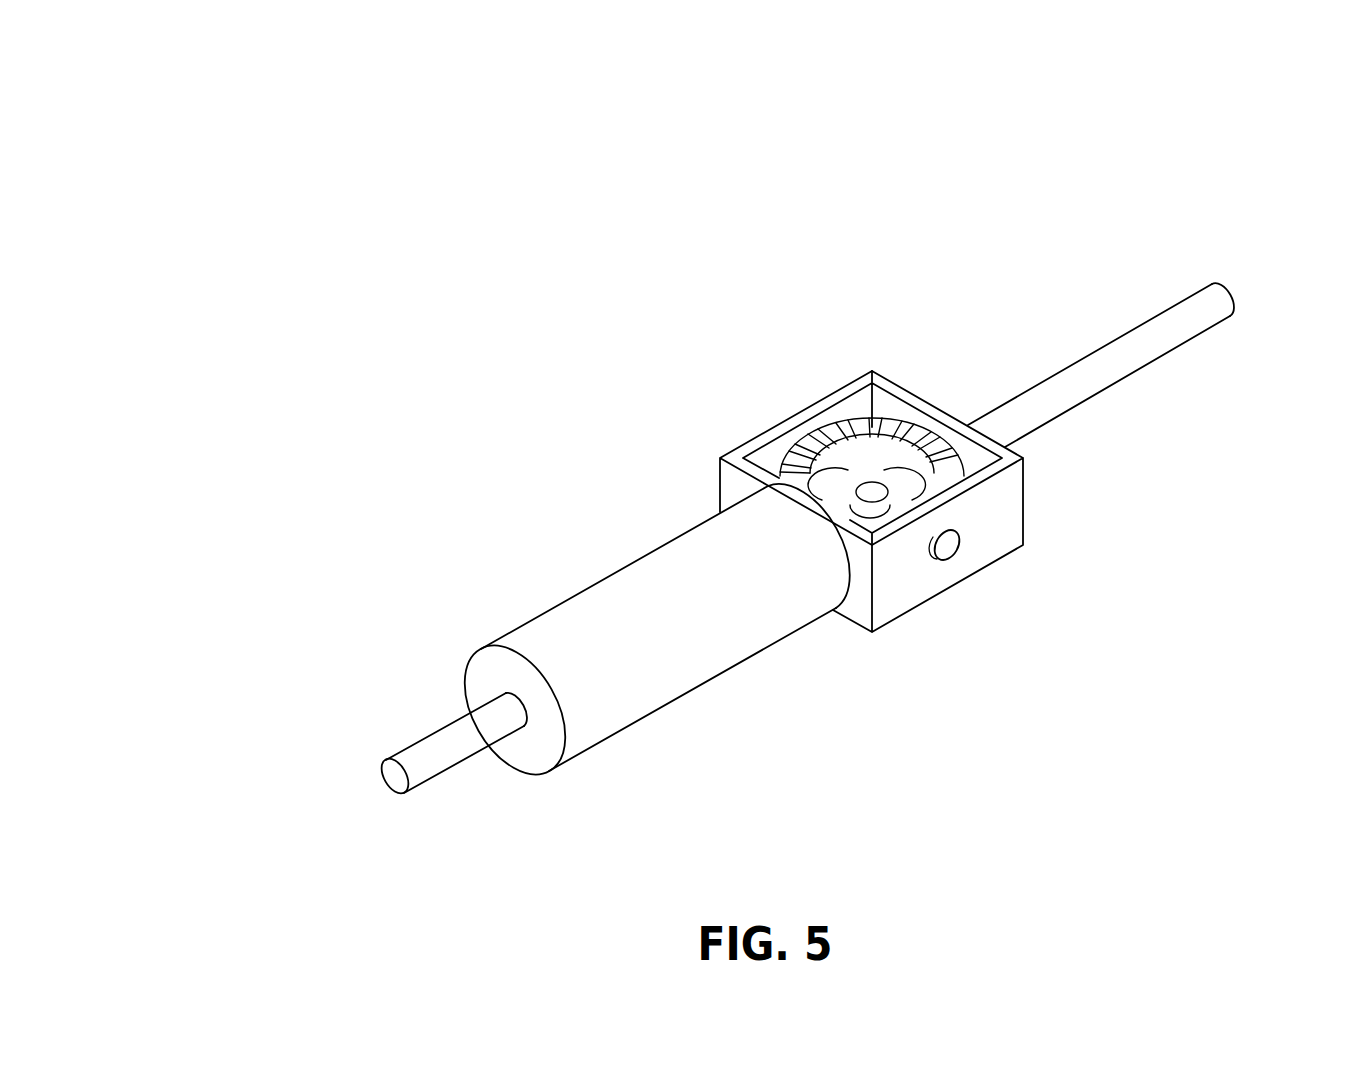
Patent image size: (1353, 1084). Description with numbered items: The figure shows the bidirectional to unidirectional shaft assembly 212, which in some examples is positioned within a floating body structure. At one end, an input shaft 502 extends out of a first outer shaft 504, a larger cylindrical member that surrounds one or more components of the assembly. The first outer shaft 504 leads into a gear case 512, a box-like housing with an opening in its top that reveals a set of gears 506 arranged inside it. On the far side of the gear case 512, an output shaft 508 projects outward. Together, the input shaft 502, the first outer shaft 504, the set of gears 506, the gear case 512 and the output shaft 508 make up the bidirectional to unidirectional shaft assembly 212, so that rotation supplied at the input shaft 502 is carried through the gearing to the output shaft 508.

The bidirectional to unidirectional shaft assembly 212 is at (279, 86).
The input shaft 502 is at (428, 740).
The first outer shaft 504 is at (640, 620).
The set of gears 506 is at (910, 435).
The output shaft 508 is at (1062, 375).
The gear case 512 is at (913, 573).